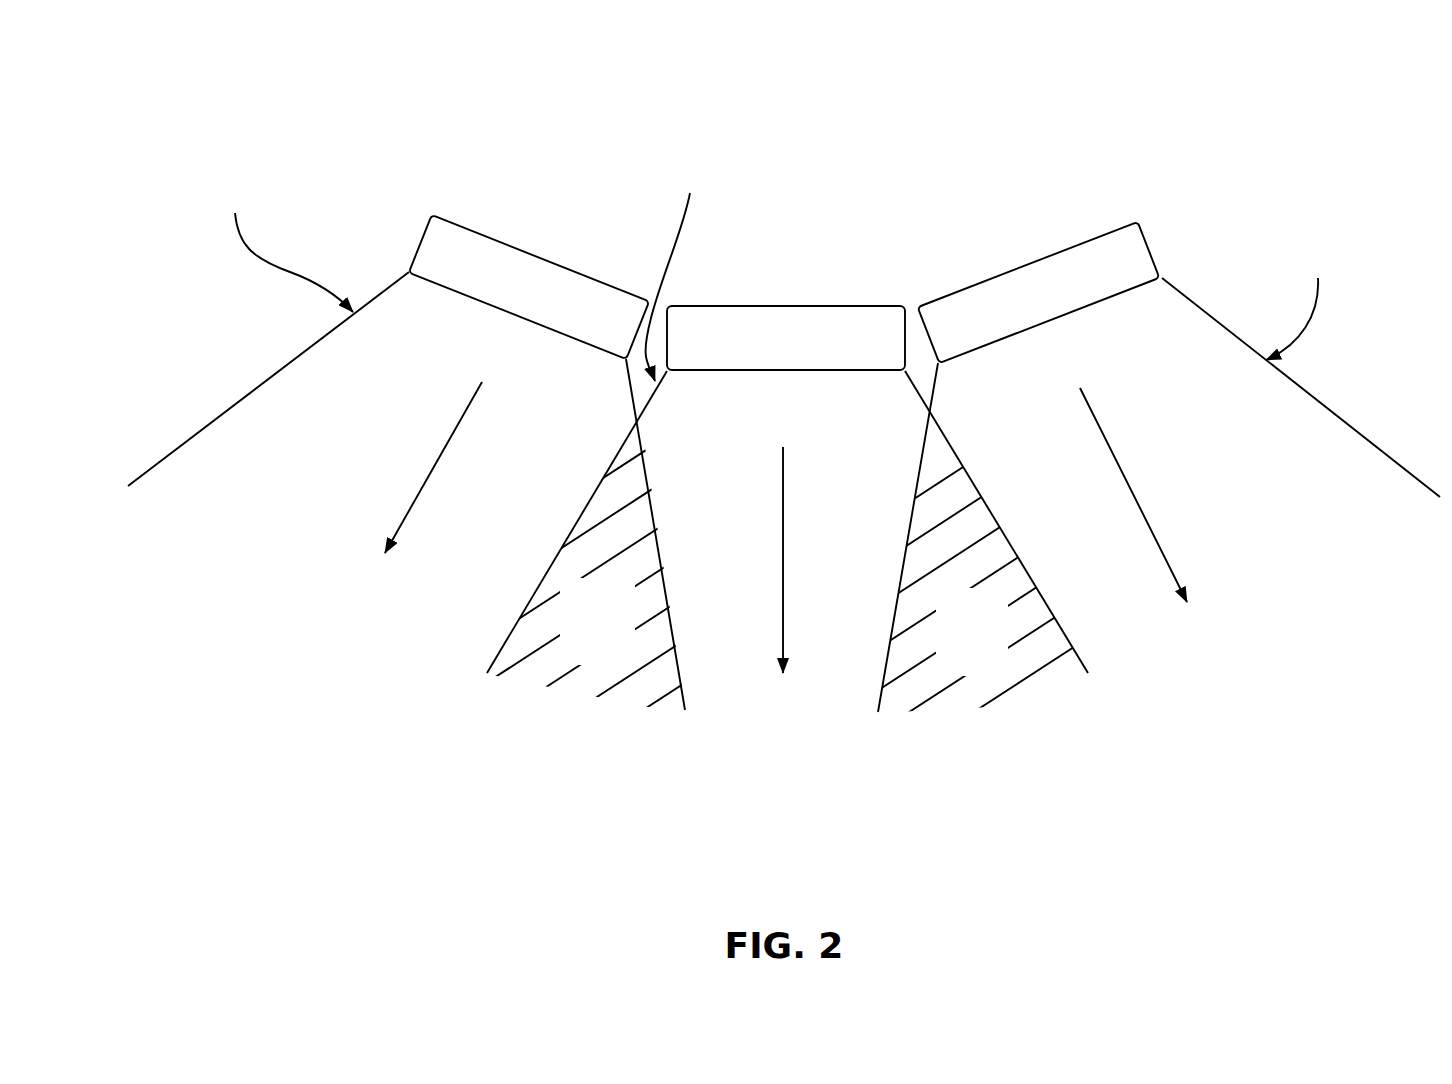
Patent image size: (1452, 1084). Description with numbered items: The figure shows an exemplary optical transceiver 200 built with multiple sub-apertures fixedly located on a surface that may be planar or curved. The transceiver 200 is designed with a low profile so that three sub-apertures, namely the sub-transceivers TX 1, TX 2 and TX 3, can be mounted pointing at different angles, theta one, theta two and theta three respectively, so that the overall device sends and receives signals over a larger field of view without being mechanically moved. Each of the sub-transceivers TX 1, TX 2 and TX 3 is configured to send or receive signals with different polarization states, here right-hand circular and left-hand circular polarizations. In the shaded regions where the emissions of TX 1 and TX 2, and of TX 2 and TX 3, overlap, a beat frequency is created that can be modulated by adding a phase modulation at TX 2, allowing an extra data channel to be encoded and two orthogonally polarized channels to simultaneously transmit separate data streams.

The optical transceiver 200 is at (784, 431).
The sub-transceiver TX1 1 is at (406, 429).
The sub-transceiver TX2 2 is at (787, 402).
The sub-transceiver TX3 3 is at (1159, 464).